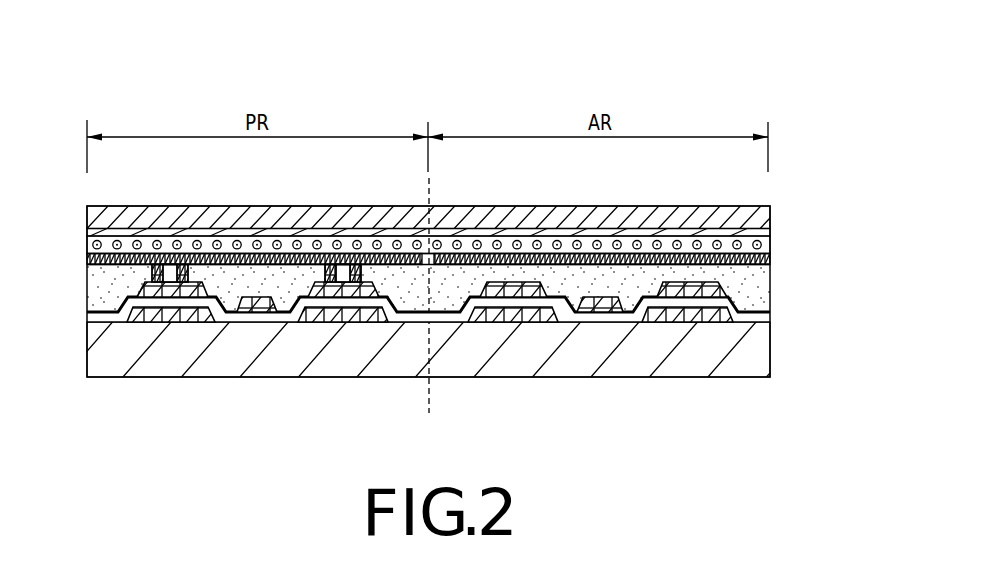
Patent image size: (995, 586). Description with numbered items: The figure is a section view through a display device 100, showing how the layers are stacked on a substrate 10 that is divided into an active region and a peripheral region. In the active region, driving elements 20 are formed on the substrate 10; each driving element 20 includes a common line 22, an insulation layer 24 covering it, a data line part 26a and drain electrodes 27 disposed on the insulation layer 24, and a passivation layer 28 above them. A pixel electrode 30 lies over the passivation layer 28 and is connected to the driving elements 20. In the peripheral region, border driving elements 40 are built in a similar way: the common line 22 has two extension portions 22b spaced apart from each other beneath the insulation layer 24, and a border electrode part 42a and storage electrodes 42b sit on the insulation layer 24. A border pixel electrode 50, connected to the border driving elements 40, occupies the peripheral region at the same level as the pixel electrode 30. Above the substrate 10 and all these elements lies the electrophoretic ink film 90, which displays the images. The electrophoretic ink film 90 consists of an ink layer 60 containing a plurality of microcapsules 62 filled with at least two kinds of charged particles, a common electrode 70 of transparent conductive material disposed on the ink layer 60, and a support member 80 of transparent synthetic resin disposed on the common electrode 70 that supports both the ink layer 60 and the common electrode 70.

The display device 100 is at (511, 109).
The substrate 10 is at (697, 358).
The driving element 20 is at (513, 372).
The common line 22 is at (485, 317).
The insulation layer 24 is at (763, 317).
The data line part 26a is at (607, 305).
The drain electrode 27 is at (535, 290).
The passivation layer 28 is at (760, 290).
The pixel electrode 30 is at (767, 260).
The border driving element 40 is at (257, 355).
The extension portion 22b is at (193, 313).
The border electrode part 42a is at (260, 305).
The storage electrode 42b is at (152, 292).
The border pixel electrode 50 is at (85, 263).
The ink layer 60 is at (457, 205).
The microcapsule 62 is at (697, 243).
The common electrode 70 is at (767, 233).
The support member 80 is at (840, 242).
The electrophoretic ink film 90 is at (479, 205).